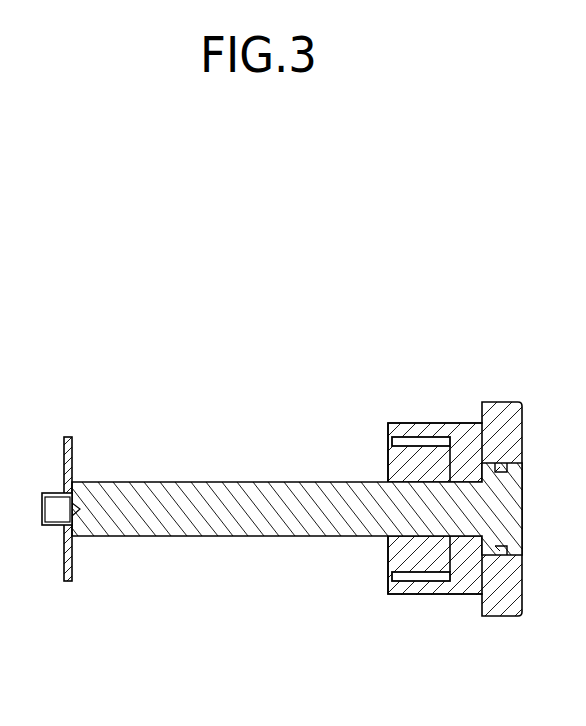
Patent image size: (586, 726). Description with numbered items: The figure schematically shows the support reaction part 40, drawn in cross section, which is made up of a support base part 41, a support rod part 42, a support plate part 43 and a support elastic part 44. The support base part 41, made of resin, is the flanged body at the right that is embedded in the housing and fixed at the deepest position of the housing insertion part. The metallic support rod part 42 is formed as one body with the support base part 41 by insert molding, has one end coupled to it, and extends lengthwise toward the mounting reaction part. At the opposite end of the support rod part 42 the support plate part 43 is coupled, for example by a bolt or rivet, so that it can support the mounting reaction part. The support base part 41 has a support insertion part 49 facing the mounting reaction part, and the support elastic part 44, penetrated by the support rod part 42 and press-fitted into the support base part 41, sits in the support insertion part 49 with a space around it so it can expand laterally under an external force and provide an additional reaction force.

The support reaction part 40 is at (517, 237).
The support base part 41 is at (500, 605).
The support rod part 42 is at (232, 522).
The support plate part 43 is at (67, 568).
The support elastic part 44 is at (422, 555).
The support insertion part 49 is at (408, 432).